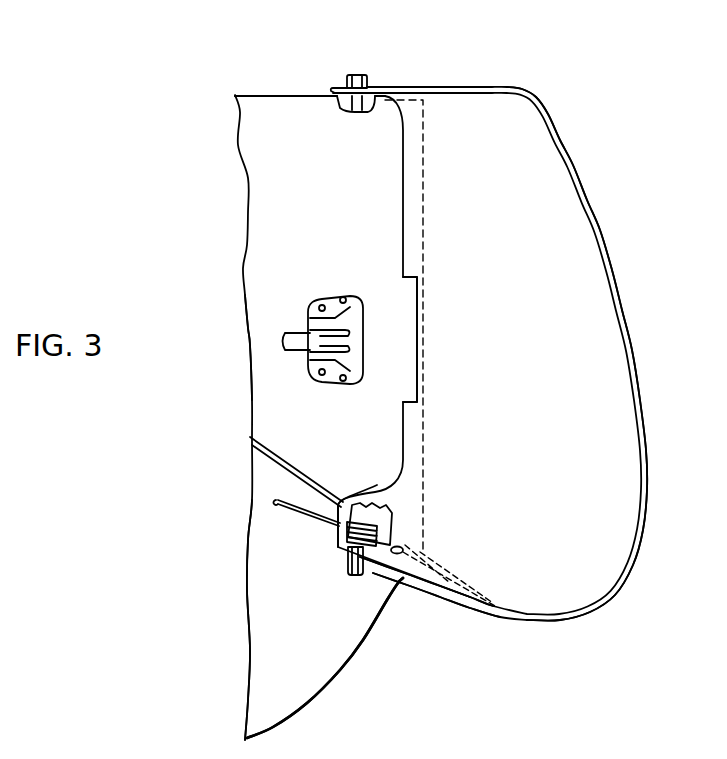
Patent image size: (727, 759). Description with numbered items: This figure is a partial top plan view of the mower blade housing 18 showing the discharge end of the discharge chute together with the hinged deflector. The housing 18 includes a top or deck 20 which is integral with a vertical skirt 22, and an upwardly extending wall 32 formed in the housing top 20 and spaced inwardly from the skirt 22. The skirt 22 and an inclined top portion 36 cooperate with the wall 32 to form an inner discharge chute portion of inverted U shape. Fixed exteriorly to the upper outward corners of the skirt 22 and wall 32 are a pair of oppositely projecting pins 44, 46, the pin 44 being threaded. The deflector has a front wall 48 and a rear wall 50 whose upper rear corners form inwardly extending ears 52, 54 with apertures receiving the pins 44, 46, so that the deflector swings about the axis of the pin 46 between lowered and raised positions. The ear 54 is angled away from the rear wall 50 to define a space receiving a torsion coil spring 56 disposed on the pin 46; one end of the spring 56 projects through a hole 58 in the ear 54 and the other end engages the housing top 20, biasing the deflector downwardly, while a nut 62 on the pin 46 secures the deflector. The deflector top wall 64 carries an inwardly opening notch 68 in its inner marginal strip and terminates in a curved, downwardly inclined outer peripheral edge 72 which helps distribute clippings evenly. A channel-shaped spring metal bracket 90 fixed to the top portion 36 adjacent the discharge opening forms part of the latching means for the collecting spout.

The mower blade housing 18 is at (240, 268).
The top or deck 20 is at (268, 652).
The vertical skirt 22 is at (268, 98).
The upwardly extending wall 32 is at (268, 458).
The top portion 36 is at (258, 368).
The pin 44 is at (360, 76).
The pin 46 is at (353, 576).
The front wall 48 is at (453, 87).
The rear wall 50 is at (395, 579).
The ear 52 is at (337, 100).
The ear 54 is at (330, 550).
The torsion coil spring 56 is at (347, 530).
The hole 58 is at (403, 548).
The nut 62 is at (343, 88).
The top wall 64 is at (570, 242).
The notch 68 is at (417, 345).
The outer peripheral edge 72 is at (630, 336).
The spring metal bracket 90 is at (329, 286).